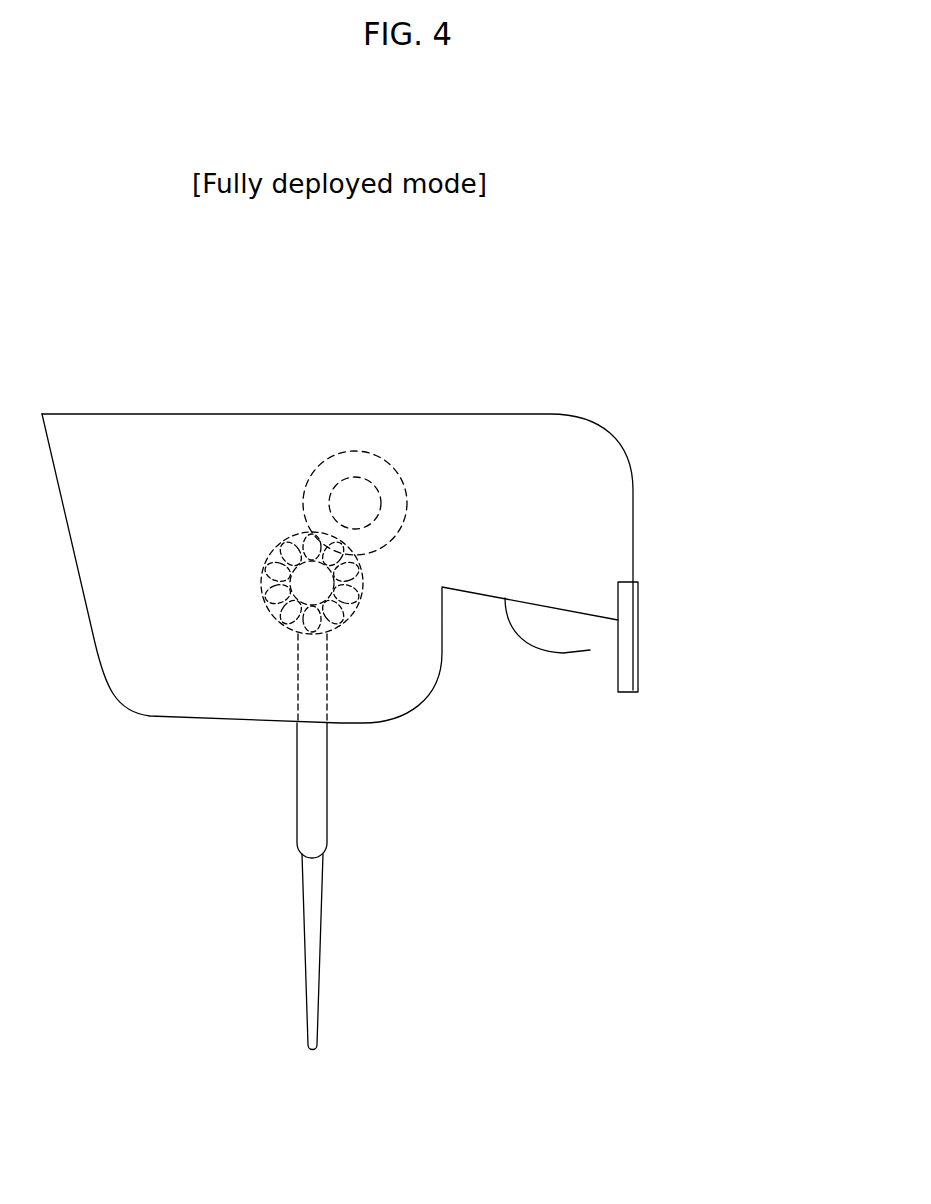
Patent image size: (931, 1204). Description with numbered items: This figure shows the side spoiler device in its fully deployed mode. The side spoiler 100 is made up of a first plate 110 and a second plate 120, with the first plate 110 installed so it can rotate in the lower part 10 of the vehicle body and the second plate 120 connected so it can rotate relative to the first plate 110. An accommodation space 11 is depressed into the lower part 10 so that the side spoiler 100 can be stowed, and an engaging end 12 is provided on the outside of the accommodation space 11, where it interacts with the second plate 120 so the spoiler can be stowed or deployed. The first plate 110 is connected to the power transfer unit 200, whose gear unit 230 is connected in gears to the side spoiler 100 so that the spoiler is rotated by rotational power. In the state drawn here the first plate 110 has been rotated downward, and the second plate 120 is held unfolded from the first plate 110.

The lower part of the vehicle body 10 is at (602, 421).
The accommodation space 11 is at (590, 650).
The engaging end 12 is at (638, 677).
The side spoiler 100 is at (202, 886).
The first plate 110 is at (307, 800).
The second plate 120 is at (310, 913).
The power transfer unit 200 is at (284, 494).
The gear unit 230 is at (261, 587).